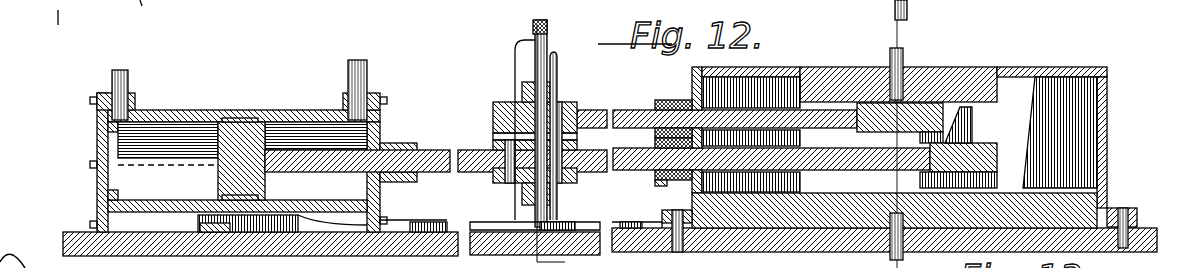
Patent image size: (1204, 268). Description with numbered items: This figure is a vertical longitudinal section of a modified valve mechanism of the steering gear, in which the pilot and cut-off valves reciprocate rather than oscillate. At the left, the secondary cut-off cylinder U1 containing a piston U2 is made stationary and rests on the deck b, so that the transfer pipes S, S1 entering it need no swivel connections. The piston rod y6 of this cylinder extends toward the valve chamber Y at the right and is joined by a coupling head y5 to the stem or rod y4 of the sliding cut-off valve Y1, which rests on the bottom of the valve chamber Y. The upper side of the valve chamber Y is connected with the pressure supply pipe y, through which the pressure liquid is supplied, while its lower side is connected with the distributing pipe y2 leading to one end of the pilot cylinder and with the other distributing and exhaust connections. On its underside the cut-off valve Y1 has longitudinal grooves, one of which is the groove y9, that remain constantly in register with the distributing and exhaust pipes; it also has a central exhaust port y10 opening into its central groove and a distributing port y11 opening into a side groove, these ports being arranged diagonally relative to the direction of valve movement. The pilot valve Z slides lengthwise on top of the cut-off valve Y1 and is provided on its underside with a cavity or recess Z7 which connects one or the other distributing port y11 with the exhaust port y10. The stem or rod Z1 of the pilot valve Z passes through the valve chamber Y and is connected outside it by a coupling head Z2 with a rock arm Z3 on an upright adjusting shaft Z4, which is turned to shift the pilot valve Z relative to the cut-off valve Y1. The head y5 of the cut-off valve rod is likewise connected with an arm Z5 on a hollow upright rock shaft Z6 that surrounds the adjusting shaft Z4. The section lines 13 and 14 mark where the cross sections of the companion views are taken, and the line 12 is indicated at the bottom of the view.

The deck b is at (66, 238).
The transfer pipe S is at (128, 82).
The transfer pipe S1 is at (348, 72).
The secondary cut-off cylinder U1 is at (173, 113).
The piston U2 is at (225, 170).
The piston rod y6 is at (460, 157).
The coupling head Z2 is at (500, 108).
The rock arm Z3 is at (557, 80).
The adjusting shaft Z4 is at (547, 30).
The arm Z5 is at (522, 198).
The hollow rock shaft Z6 is at (520, 62).
The section line 13 is at (555, 136).
The coupling head y5 is at (565, 185).
The pilot valve stem Z1 is at (655, 112).
The cut-off valve stem y4 is at (650, 168).
The pilot valve Z is at (950, 100).
The valve chamber Y is at (1058, 67).
The longitudinal groove y9 is at (1000, 178).
The section line 14 is at (898, 48).
The distributing pipe y2 is at (893, 10).
The pressure supply pipe y is at (890, 55).
The member Z7 is at (925, 137).
The exhaust port y10 is at (935, 146).
The distributing port y11 is at (1007, 143).
The cut-off valve Y1 is at (985, 158).
The section line 12 is at (838, 178).